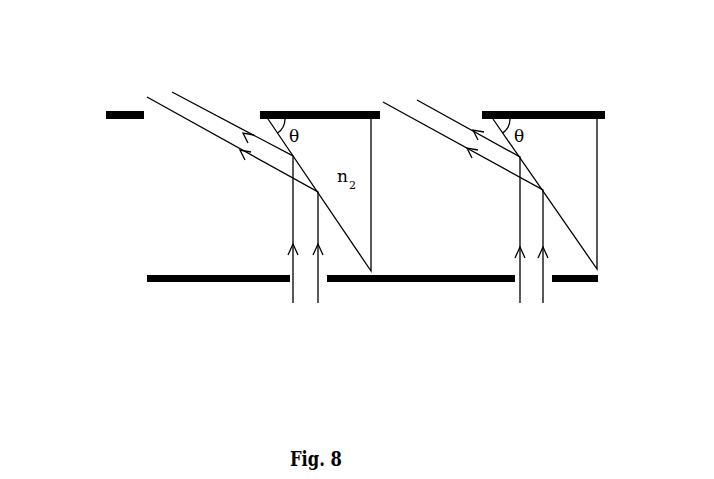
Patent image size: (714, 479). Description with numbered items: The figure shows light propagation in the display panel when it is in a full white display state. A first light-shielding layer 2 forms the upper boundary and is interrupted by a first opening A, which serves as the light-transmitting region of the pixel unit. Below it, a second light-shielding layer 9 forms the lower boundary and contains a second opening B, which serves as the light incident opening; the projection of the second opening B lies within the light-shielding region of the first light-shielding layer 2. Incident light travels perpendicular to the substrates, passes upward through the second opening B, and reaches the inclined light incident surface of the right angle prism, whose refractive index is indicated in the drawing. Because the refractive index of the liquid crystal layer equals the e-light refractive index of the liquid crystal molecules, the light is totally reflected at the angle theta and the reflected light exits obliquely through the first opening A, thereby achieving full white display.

The first light-shielding layer 2 is at (106, 115).
The second light-shielding layer 9 is at (147, 278).
The first opening A is at (483, 103).
The second opening B is at (327, 290).